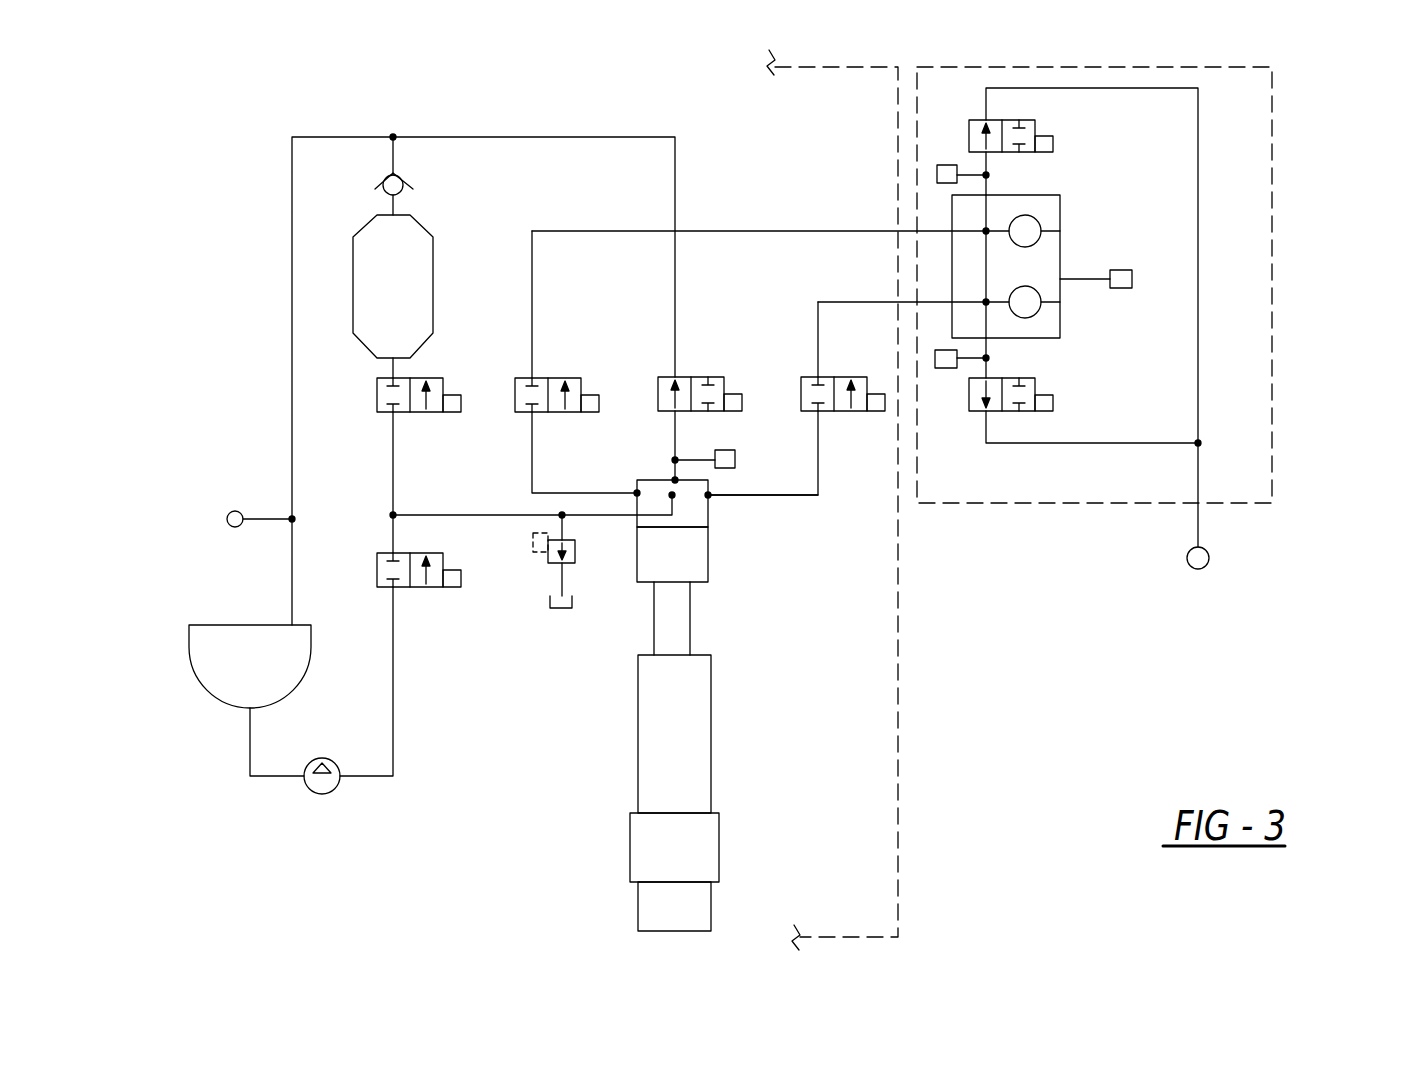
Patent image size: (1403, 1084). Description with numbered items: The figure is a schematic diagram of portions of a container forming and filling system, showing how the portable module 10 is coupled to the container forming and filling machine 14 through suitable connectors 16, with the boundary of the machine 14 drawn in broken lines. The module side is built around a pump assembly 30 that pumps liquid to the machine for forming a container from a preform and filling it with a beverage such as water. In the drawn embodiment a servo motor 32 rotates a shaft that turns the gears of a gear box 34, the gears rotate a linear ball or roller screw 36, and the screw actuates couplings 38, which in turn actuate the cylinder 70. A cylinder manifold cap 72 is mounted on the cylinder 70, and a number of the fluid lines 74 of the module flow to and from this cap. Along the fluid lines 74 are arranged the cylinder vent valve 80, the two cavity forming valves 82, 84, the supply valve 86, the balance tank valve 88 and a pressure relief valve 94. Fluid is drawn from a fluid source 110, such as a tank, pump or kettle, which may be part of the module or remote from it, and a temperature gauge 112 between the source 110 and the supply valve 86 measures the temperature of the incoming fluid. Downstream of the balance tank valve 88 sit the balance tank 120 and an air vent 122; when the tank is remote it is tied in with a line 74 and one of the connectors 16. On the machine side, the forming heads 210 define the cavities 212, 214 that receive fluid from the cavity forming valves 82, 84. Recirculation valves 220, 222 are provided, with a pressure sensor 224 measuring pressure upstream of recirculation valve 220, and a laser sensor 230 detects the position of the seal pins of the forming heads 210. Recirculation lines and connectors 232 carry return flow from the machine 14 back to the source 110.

The portable module 10 is at (838, 842).
The container forming and filling machine 14 is at (1272, 183).
The connectors 16 is at (905, 302).
The pump assembly 30 is at (645, 761).
The servo motor 32 is at (657, 903).
The gear box 34 is at (642, 850).
The ball or roller screw 36 is at (648, 715).
The couplings 38 is at (695, 622).
The cylinder 70 is at (708, 557).
The cylinder manifold cap 72 is at (708, 512).
The fluid lines 74 is at (468, 515).
The cylinder vent valve 80 is at (682, 382).
The cavity forming valve 82 is at (541, 412).
The cavity forming valve 84 is at (827, 412).
The supply valve 86 is at (403, 587).
The balance tank valve 88 is at (403, 412).
The pressure relief valve 94 is at (555, 610).
The fluid source 110 is at (210, 650).
The temperature gauge 112 is at (322, 787).
The balance tank 120 is at (433, 285).
The air vent 122 is at (403, 188).
The forming heads 210 is at (1060, 247).
The cavity 212 is at (1060, 230).
The cavity 214 is at (1060, 302).
The recirculation valve 220 is at (1032, 128).
The recirculation valve 222 is at (1013, 412).
The pressure sensor 224 is at (937, 177).
The laser sensor 230 is at (1132, 280).
The recirculation lines and connectors 232 is at (1210, 563).